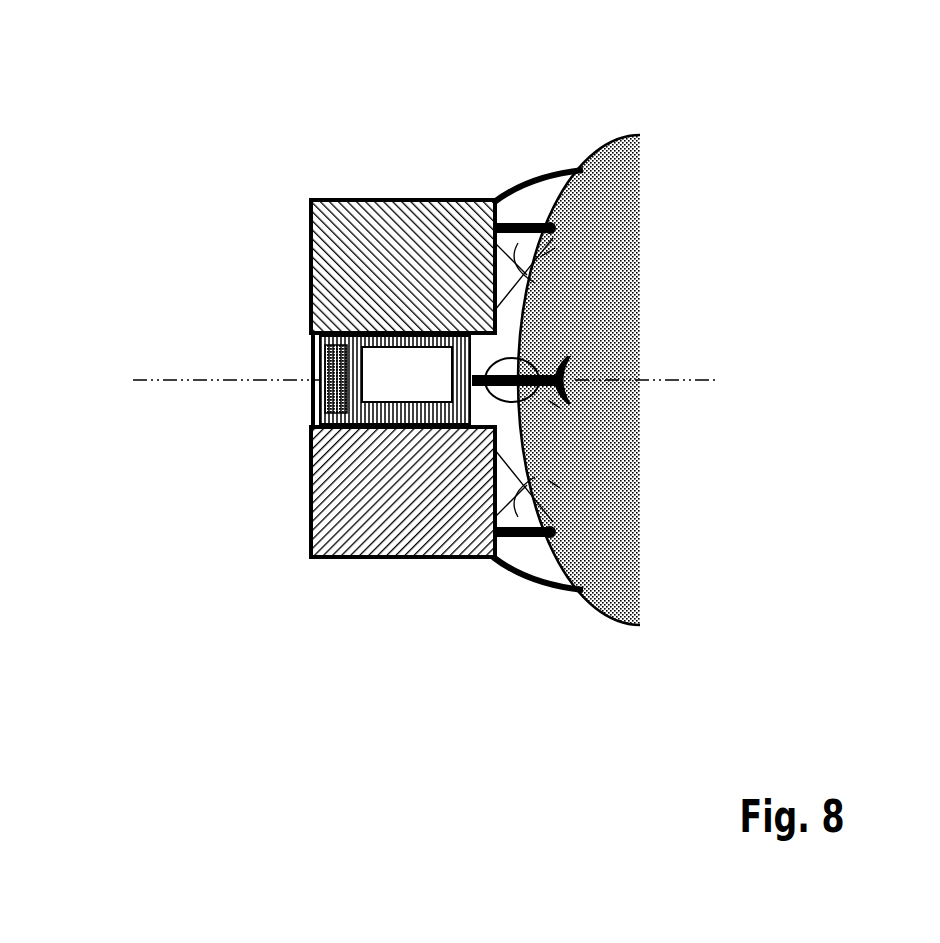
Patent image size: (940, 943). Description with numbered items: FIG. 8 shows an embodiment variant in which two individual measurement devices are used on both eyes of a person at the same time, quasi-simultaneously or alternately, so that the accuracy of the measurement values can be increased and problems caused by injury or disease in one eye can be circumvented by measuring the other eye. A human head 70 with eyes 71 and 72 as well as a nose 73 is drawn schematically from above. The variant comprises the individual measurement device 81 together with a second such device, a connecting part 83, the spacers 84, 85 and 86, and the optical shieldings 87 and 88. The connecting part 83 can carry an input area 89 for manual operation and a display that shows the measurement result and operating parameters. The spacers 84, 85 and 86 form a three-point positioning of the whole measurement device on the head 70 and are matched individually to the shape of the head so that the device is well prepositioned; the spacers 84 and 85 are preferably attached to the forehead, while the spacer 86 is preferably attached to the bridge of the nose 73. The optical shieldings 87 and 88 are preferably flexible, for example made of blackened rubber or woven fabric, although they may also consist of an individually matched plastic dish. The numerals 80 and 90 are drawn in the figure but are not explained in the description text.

The human head 70 is at (648, 419).
The eye 71 is at (679, 541).
The eye 72 is at (679, 183).
The nose 73 is at (693, 460).
The lower housing part 80 is at (395, 558).
The individual measurement device 81 is at (403, 206).
The connecting part 83 is at (300, 492).
The spacer 84 is at (505, 585).
The spacer 85 is at (507, 164).
The spacer 86 is at (635, 307).
The optical shielding 87 is at (538, 638).
The optical shielding 88 is at (538, 121).
The input area 89 is at (239, 415).
The display 90 is at (407, 510).